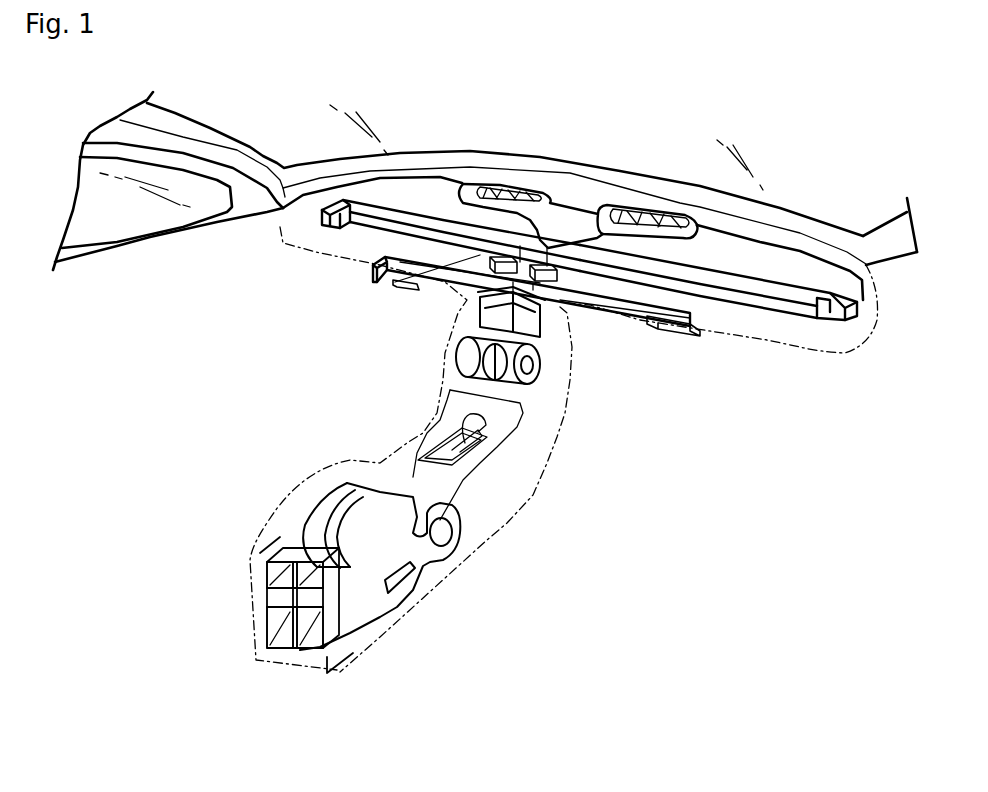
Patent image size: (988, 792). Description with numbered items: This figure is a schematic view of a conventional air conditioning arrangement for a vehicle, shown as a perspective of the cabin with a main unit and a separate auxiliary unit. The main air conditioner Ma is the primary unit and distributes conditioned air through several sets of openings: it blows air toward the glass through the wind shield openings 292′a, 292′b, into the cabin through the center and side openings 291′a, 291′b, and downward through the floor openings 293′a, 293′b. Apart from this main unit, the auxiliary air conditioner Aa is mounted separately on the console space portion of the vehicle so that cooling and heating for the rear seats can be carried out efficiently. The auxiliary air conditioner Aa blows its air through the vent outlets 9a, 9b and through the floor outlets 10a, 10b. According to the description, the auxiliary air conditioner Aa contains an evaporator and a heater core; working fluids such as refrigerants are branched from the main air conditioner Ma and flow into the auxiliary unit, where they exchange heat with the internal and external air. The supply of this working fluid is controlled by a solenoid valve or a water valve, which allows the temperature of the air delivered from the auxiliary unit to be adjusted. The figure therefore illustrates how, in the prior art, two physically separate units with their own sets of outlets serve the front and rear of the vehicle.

The wind shield opening 292′b is at (503, 192).
The wind shield opening 292′a is at (647, 212).
The center and side opening 291′b is at (327, 226).
The center and side opening 291′a is at (817, 317).
The floor opening 293′b is at (392, 285).
The floor opening 293′a is at (667, 335).
The main air conditioner Ma is at (553, 347).
The auxiliary air conditioner Aa is at (425, 562).
The vent outlet 9b is at (278, 571).
The vent outlet 9a is at (313, 583).
The floor outlet 10b is at (277, 624).
The floor outlet 10a is at (320, 640).